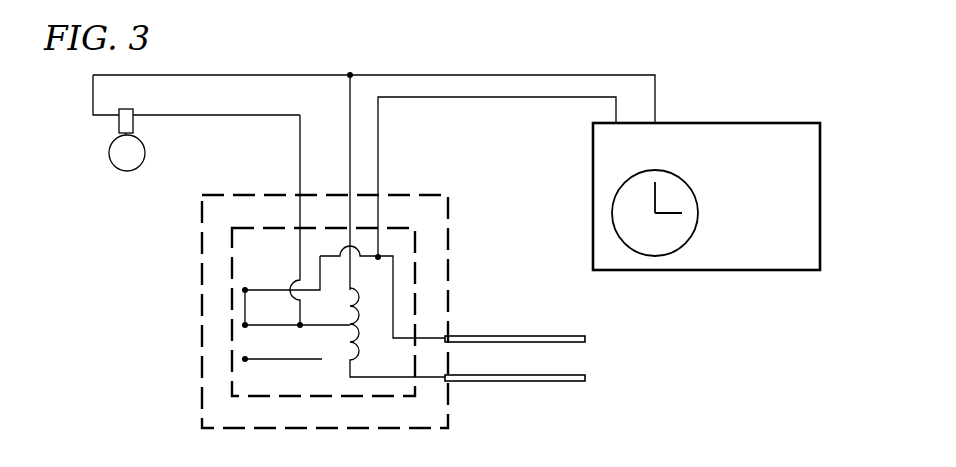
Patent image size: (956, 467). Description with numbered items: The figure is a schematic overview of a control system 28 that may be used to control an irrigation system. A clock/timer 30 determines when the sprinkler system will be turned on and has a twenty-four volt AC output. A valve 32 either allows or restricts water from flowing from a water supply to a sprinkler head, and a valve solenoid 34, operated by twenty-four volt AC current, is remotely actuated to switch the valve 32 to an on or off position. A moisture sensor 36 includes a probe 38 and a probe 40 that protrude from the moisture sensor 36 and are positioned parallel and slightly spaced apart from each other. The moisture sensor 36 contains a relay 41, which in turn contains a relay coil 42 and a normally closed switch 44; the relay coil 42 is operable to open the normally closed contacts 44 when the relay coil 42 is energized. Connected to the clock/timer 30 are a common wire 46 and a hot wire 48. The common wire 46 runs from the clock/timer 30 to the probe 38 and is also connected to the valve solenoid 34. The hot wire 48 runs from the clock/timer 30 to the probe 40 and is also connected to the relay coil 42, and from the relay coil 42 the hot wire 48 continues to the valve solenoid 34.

The control system 28 is at (198, 251).
The clock/timer 30 is at (820, 240).
The valve 32 is at (123, 171).
The valve solenoid 34 is at (120, 123).
The moisture sensor 36 is at (450, 262).
The probe 38 is at (570, 383).
The probe 40 is at (568, 337).
The relay 41 is at (417, 235).
The relay coil 42 is at (368, 332).
The normally closed switch 44 is at (247, 300).
The common wire 46 is at (93, 98).
The hot wire 48 is at (300, 177).